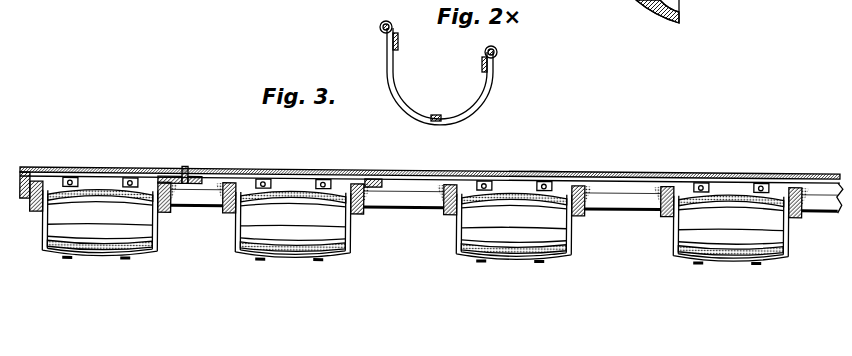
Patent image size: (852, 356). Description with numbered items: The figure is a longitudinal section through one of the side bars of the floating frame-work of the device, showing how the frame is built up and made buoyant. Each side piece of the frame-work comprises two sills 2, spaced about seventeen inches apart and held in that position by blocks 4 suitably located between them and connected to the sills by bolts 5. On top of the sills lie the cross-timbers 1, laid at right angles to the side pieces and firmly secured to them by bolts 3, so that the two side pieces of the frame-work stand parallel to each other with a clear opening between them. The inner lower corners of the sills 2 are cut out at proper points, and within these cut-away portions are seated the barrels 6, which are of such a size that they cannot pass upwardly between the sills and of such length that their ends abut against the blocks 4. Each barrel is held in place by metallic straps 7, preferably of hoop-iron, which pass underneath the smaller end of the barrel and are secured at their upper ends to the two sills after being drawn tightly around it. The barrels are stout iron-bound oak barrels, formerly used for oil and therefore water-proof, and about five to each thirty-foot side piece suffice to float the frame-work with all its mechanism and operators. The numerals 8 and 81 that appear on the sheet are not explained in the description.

In FIG. 3, the cross-timbers 1 is at (30, 170).
In FIG. 3, the sills 2 is at (418, 205).
In FIG. 3, the bolts 3 is at (33, 167).
In FIG. 3, the blocks 4 is at (35, 208).
In FIG. 3, the bolts 5 is at (225, 190).
In FIG. 3, the barrels 6 is at (105, 256).
In FIG. 3, the metallic straps 7 is at (72, 178).
In FIG. 3, the plate portion 8 is at (545, 170).
The arc segment fragment 81 is at (669, 11).